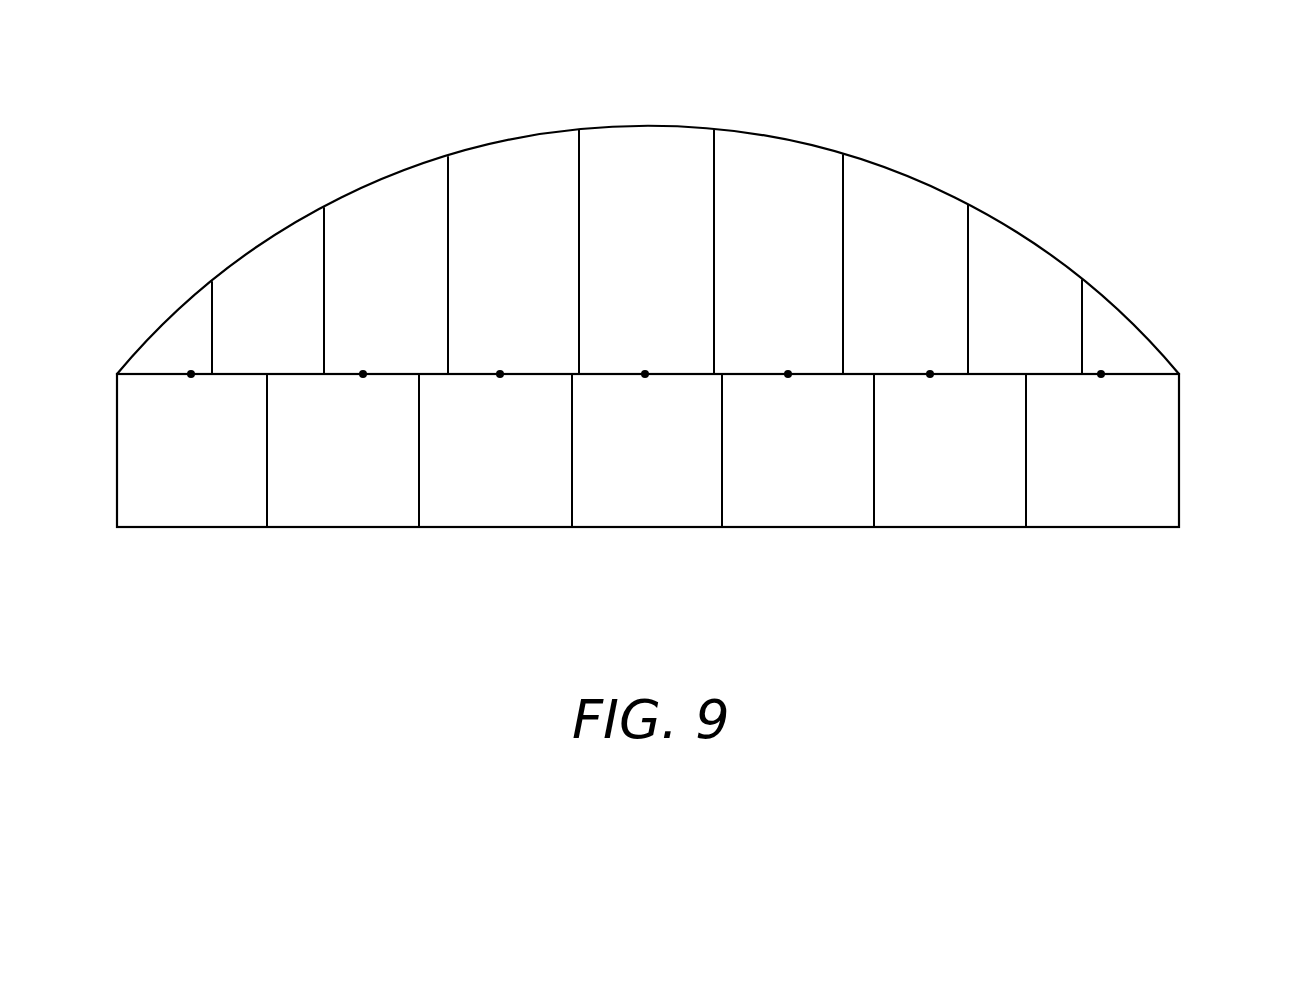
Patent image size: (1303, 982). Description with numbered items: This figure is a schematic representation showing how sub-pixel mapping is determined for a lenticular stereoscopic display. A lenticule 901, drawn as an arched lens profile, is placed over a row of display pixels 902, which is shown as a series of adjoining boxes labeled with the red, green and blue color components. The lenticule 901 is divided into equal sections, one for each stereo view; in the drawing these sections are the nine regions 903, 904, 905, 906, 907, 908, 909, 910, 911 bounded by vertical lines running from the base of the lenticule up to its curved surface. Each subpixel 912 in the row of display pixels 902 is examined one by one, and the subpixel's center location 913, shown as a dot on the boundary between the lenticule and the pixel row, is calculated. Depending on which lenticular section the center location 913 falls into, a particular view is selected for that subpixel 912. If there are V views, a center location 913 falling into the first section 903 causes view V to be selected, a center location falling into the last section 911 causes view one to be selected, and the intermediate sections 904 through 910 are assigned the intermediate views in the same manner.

The lenticule 901 is at (1207, 123).
The row of display pixels 902 is at (1207, 372).
The lens section 903 is at (197, 322).
The lens section 904 is at (277, 267).
The lens section 905 is at (390, 205).
The lens section 906 is at (518, 165).
The lens section 907 is at (650, 147).
The lens section 908 is at (790, 163).
The lens section 909 is at (908, 202).
The lens section 910 is at (1022, 265).
The lens section 911 is at (1107, 318).
The subpixel 912 is at (202, 482).
The center location 913 is at (183, 368).